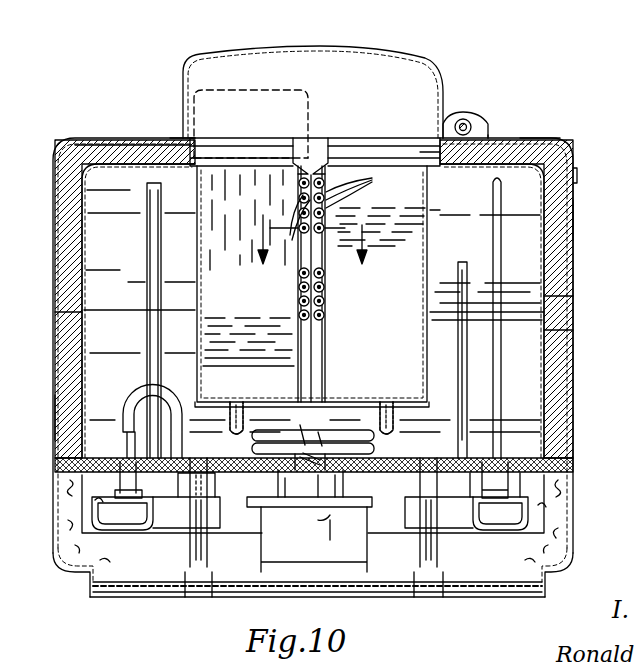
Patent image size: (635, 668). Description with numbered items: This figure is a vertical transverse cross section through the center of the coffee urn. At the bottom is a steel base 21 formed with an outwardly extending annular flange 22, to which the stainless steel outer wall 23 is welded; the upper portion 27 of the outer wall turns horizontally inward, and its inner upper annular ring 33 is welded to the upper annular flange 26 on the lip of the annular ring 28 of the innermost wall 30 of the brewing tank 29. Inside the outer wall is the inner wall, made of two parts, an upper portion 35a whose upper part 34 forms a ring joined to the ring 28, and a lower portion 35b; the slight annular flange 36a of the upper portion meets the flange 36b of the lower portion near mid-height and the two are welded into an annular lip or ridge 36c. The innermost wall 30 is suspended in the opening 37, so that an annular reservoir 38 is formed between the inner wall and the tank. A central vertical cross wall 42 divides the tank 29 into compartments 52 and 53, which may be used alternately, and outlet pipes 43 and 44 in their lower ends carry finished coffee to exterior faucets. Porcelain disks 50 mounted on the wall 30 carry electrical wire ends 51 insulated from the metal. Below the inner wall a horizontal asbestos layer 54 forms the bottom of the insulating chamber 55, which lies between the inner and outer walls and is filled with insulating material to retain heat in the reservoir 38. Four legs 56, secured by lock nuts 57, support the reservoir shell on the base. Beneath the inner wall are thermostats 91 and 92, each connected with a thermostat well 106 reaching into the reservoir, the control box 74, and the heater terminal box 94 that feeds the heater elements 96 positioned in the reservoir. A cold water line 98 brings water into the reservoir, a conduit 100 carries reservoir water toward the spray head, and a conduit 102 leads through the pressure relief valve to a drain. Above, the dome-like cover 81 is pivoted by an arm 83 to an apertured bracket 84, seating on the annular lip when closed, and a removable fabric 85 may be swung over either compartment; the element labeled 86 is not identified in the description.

The metal base 21 is at (545, 598).
The annular flange 22 is at (568, 560).
The outer wall 23 is at (570, 355).
The upper annular flange 26 is at (152, 138).
The upper portion of outer wall 27 is at (578, 148).
The annular ring 28 is at (428, 150).
The brewing pot or tank 29 is at (385, 283).
The innermost wall 30 is at (193, 267).
The inner upper annular ring 33 is at (178, 138).
The upper part of inner wall 34 is at (535, 138).
The upper portion of inner wall 35a is at (574, 205).
The lower portion of inner wall 35b is at (544, 360).
The annular flange 36a is at (570, 300).
The flange 36b is at (572, 330).
The annular lip or ridge 36c is at (56, 316).
The opening 37 is at (372, 157).
The annular reservoir 38 is at (520, 372).
The cross wall 42 is at (320, 340).
The outlet pipe 43 is at (230, 422).
The outlet pipe 44 is at (393, 428).
The disks 50 is at (300, 240).
The electrical wire ends 51 is at (342, 206).
The compartment 52 is at (240, 350).
The compartment 53 is at (430, 210).
The insulating layer 54 is at (574, 468).
The insulating chamber 55 is at (58, 398).
The legs or rods 56 is at (185, 568).
The lock nuts 57 is at (210, 480).
The control box 74 is at (345, 560).
The dome-like metal cover 81 is at (244, 48).
The projecting metal arm or lever 83 is at (452, 122).
The apertured bracket 84 is at (490, 136).
The removable fabric 85 is at (318, 140).
The handle recess 86 is at (290, 90).
The thermostat 91 is at (120, 512).
The thermostat 92 is at (510, 512).
The heater terminal box 94 is at (410, 468).
The heater elements 96 is at (374, 438).
The cold water line 98 is at (173, 400).
The pipe line or conduit 100 is at (467, 355).
The conduit or pipe 102 is at (147, 246).
The thermostat well 106 is at (503, 205).